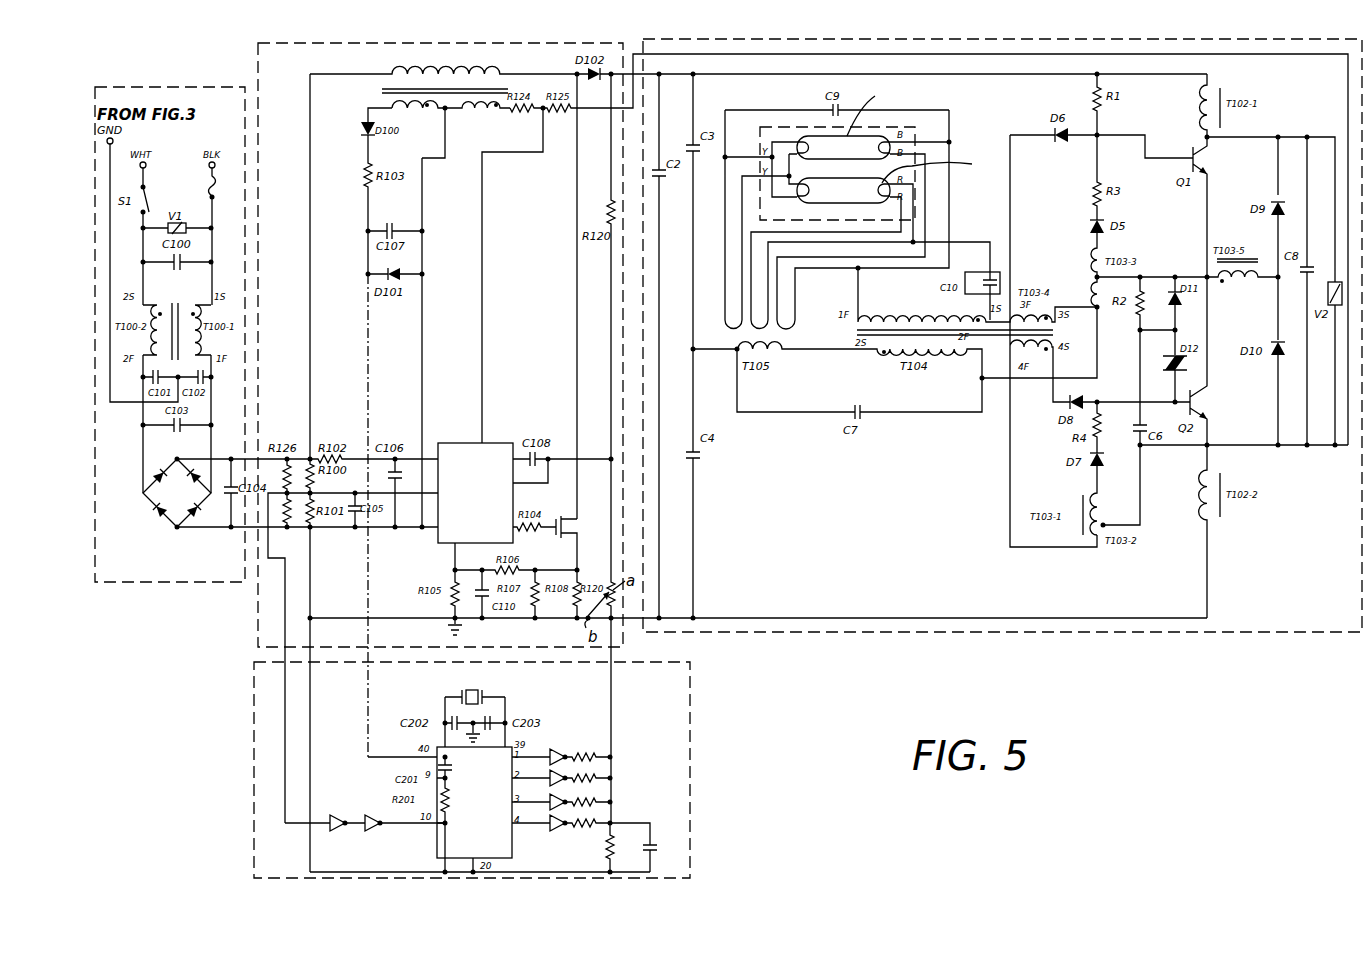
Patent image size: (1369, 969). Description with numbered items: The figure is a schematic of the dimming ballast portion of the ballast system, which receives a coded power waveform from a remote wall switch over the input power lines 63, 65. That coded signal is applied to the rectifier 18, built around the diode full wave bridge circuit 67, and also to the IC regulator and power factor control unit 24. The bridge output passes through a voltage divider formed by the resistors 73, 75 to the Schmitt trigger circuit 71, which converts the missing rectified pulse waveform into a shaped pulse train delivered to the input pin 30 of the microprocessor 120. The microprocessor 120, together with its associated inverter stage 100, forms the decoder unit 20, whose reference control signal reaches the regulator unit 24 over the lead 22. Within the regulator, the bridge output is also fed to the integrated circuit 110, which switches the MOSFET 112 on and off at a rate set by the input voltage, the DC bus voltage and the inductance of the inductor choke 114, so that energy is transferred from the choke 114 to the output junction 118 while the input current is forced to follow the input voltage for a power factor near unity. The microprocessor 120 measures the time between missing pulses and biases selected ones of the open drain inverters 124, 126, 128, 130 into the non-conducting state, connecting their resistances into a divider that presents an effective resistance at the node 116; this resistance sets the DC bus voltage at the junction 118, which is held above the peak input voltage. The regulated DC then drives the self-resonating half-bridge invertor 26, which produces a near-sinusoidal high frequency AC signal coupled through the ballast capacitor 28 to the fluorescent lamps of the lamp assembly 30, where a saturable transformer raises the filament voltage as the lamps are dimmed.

The rectifier 18 is at (166, 87).
The decoder unit 20 is at (250, 700).
The lead 22 is at (595, 772).
The IC regulator and power factor control unit 24 is at (341, 42).
The invertor 26 is at (1031, 40).
The ballast capacitor 28 is at (990, 265).
The input pin 30 is at (914, 126).
The input power line 63 is at (147, 167).
The input power line 65 is at (204, 188).
The diode full wave bridge circuit 67 is at (190, 462).
The Schmitt trigger circuit 71 is at (343, 818).
The resistor 73 is at (313, 492).
The resistor 75 is at (280, 531).
The inverter IC202 100 is at (385, 830).
The integrated circuit 110 is at (438, 543).
The MOSFET 112 is at (580, 516).
The inductor choke 114 is at (493, 58).
The node 116 is at (610, 458).
The output junction 118 is at (659, 74).
The microprocessor 120 is at (440, 858).
The open drain inverter 124 is at (562, 757).
The open drain inverter 126 is at (565, 774).
The open drain inverter 128 is at (565, 798).
The open drain inverter 130 is at (556, 829).